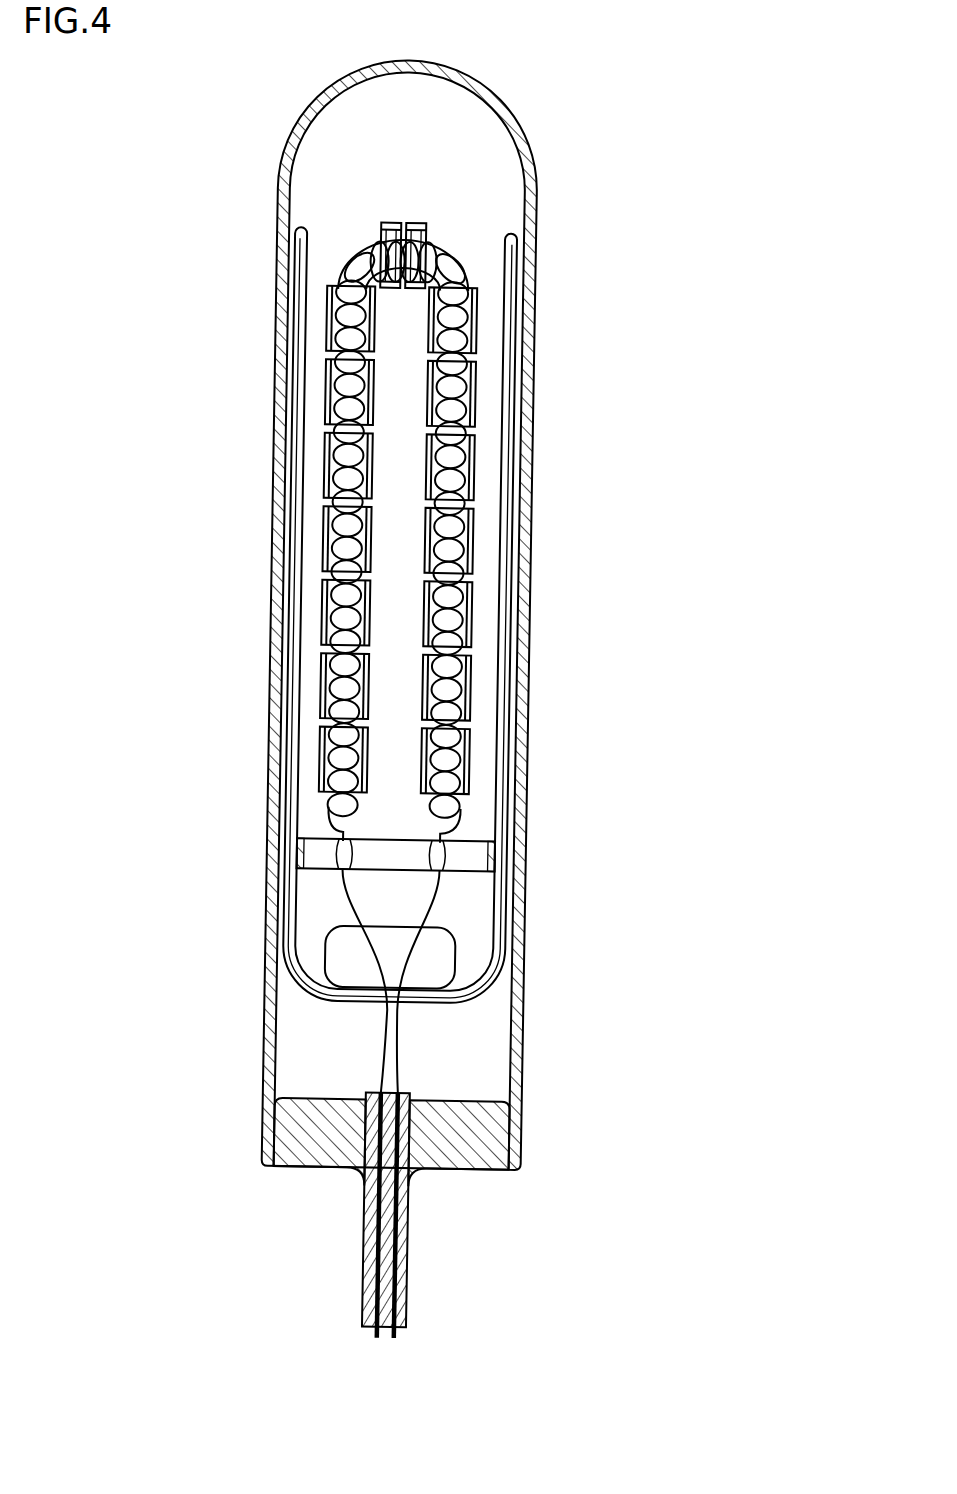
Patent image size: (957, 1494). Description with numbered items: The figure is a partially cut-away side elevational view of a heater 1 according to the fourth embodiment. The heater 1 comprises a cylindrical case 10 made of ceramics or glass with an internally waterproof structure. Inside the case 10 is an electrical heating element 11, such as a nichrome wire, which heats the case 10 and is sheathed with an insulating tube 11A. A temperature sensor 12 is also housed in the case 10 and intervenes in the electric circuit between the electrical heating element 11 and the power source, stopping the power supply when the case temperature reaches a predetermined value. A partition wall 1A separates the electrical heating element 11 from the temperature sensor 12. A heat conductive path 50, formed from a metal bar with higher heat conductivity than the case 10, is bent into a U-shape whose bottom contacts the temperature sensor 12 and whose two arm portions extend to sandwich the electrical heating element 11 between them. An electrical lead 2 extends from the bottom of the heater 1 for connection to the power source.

The heater 1 is at (551, 312).
The cylindrical case 10 is at (318, 107).
The heat conductive path 50 is at (512, 395).
The electrical heating element 11 is at (457, 785).
The insulating tube 11A is at (468, 686).
The partition wall 1A is at (320, 862).
The temperature sensor 12 is at (440, 962).
The electrical lead 2 is at (410, 1263).